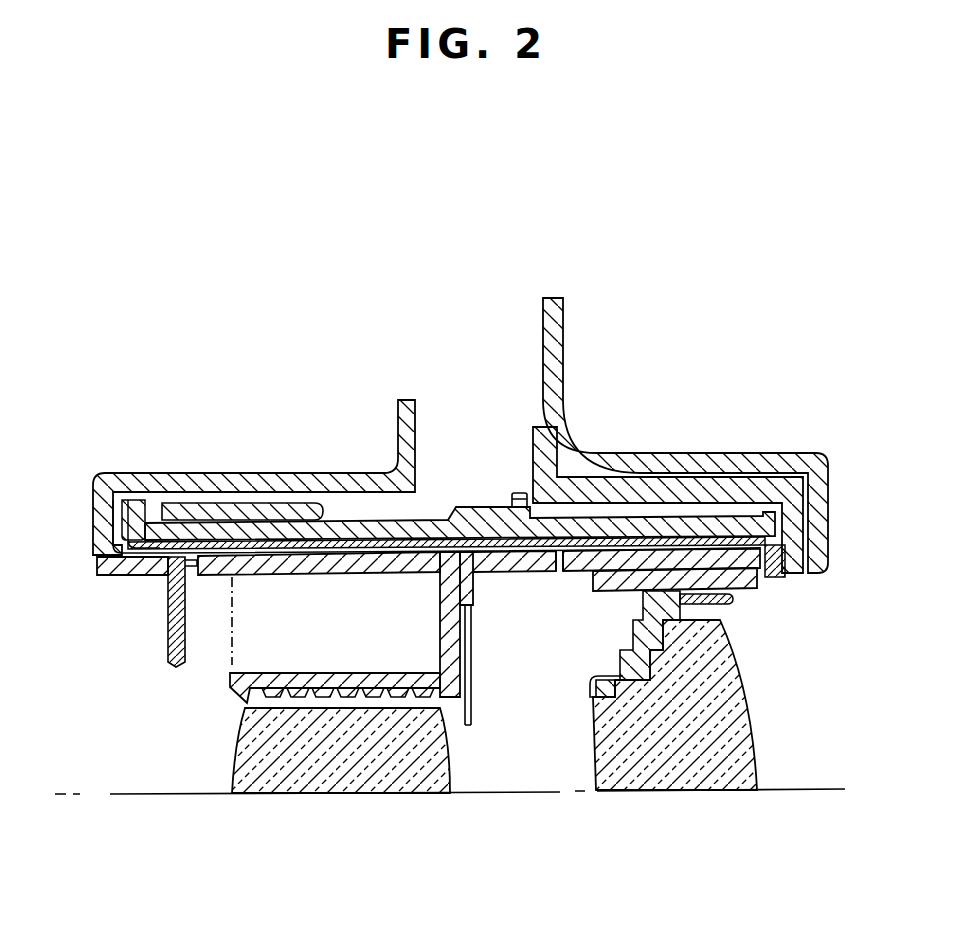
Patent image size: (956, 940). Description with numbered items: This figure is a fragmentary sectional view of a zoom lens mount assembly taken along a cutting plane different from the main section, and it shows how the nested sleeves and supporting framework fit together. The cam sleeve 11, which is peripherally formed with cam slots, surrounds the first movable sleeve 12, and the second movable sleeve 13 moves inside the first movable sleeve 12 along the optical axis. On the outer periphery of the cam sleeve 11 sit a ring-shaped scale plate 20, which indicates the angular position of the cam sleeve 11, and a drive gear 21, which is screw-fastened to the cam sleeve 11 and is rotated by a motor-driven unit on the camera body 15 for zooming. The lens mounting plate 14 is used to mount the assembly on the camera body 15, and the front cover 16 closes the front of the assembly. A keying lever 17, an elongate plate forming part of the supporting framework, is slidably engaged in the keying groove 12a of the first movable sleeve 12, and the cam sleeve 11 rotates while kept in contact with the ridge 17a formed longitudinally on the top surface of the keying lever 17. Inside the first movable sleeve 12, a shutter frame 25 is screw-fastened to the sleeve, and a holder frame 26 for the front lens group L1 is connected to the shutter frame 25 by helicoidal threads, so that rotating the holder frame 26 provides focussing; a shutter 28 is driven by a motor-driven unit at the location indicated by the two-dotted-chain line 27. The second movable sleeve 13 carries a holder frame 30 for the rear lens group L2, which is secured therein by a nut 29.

The cam sleeve 11 is at (428, 528).
The first movable sleeve 12 is at (492, 572).
The keying groove 12a is at (560, 572).
The second movable sleeve 13 is at (757, 580).
The lens mounting plate 14 is at (693, 490).
The camera body 15 is at (550, 333).
The front cover 16 is at (291, 482).
The keying lever 17 is at (402, 548).
The ridge 17a is at (287, 549).
The scale plate 20 is at (227, 512).
The drive gear 21 is at (518, 493).
The shutter frame 25 is at (450, 652).
The holder frame 26 is at (336, 695).
The optical axis 27 is at (230, 612).
The shutter 28 is at (473, 675).
The nut 29 is at (727, 600).
The holder frame 30 is at (593, 673).
The front lens group L1 is at (245, 770).
The rear lens group L2 is at (730, 745).